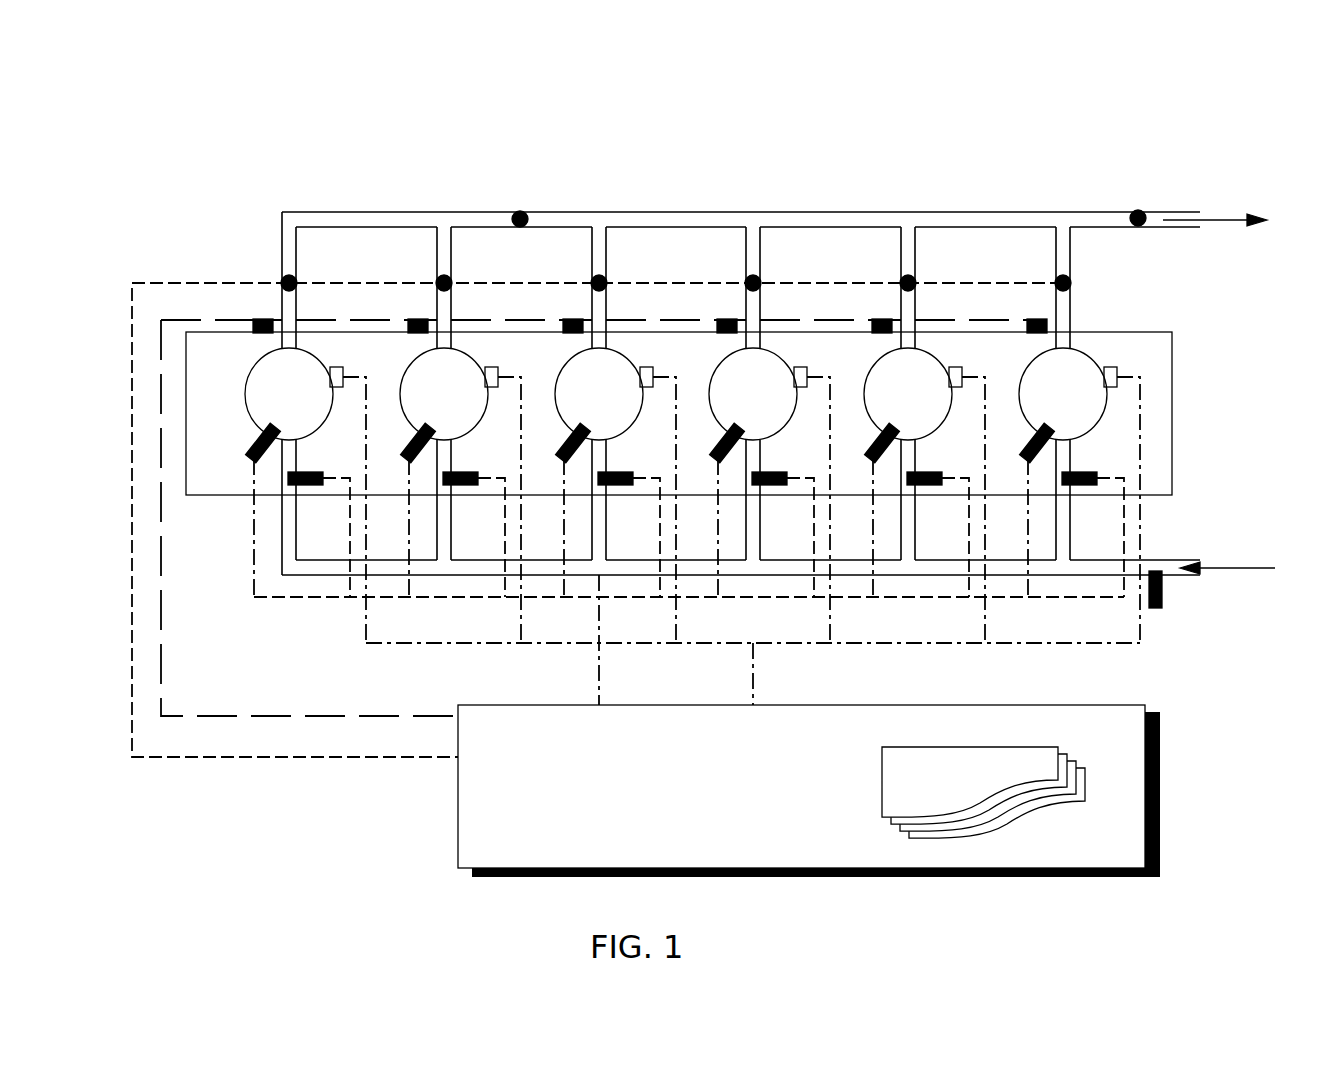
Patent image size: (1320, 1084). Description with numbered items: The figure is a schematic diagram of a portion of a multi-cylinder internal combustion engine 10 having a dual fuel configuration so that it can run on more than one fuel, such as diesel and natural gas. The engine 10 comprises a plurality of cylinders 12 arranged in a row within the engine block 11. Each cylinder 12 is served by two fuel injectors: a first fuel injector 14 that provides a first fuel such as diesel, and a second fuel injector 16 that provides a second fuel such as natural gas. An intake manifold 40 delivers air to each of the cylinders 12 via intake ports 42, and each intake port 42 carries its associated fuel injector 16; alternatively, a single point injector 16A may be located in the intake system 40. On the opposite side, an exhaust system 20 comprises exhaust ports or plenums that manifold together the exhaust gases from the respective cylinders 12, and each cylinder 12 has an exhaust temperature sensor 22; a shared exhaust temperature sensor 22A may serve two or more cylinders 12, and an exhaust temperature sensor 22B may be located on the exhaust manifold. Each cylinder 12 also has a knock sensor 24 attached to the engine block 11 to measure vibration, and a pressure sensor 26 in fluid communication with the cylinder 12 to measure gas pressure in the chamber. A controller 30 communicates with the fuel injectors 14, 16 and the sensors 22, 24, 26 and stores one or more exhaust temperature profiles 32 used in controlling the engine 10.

The multi-cylinder internal combustion engine 10 is at (174, 108).
The engine block 11 is at (1174, 331).
The cylinder 12 is at (276, 409).
The fuel injector 14 is at (256, 441).
The fuel injector 16 is at (308, 466).
The fuel injector 16A is at (1162, 598).
The exhaust system 20 is at (1174, 181).
The exhaust temperature sensor 22 is at (282, 281).
The exhaust temperature sensor 22A is at (516, 211).
The exhaust temperature sensor 22B is at (1133, 211).
The knock sensor 24 is at (252, 327).
The pressure sensor 26 is at (338, 367).
The controller 30 is at (783, 790).
The exhaust temperature profile 32 is at (951, 787).
The intake manifold 40 is at (1201, 547).
The intake port 42 is at (301, 528).